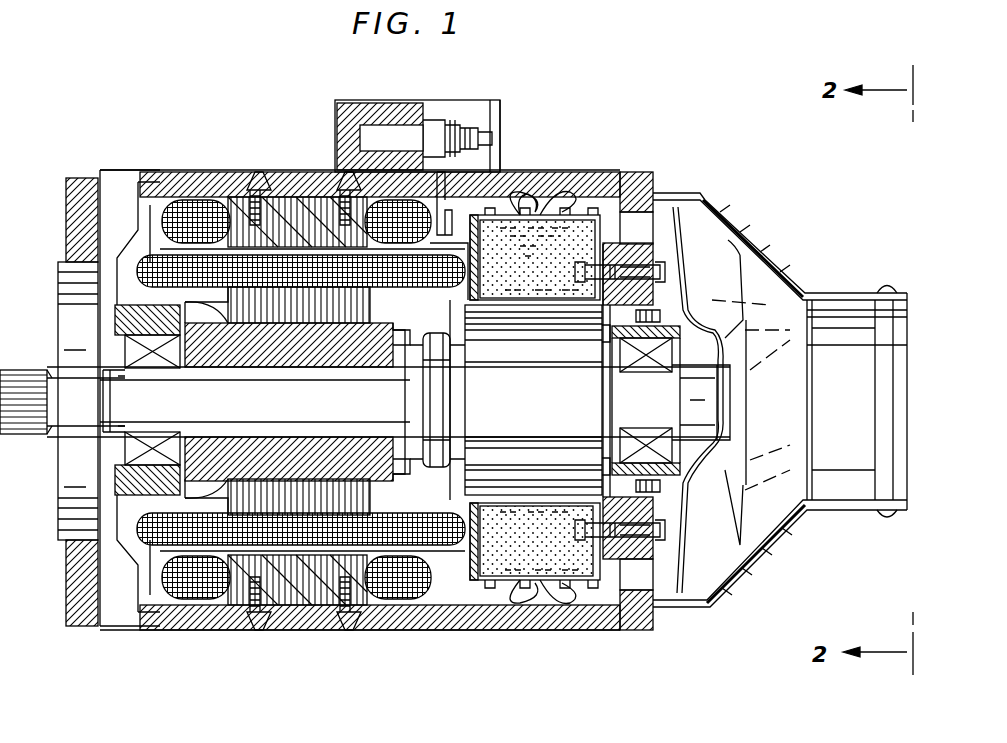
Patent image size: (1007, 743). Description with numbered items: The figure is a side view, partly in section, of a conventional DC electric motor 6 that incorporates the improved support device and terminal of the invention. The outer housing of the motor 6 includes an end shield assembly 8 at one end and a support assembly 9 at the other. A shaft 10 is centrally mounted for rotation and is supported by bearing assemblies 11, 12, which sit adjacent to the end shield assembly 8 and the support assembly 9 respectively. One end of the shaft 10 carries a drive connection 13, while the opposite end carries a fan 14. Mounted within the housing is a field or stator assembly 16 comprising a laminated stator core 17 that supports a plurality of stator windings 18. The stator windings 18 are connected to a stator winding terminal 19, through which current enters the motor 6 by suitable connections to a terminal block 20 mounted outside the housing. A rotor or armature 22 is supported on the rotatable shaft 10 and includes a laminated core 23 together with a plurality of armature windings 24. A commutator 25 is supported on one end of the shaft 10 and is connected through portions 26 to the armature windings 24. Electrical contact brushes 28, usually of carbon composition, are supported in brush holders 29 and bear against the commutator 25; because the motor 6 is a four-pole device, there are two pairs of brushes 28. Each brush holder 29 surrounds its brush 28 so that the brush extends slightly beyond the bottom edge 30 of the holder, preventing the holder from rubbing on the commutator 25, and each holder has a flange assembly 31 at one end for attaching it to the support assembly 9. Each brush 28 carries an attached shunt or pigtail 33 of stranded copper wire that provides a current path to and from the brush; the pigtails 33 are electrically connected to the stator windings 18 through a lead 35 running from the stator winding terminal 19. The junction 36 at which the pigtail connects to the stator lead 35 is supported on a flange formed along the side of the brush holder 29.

The DC electric motor 6 is at (732, 584).
The end shield assembly 8 is at (68, 218).
The support assembly 9 is at (637, 226).
The shaft 10 is at (388, 402).
The bearing assembly 11 is at (162, 440).
The bearing assembly 12 is at (650, 430).
The drive connection 13 is at (30, 432).
The fan 14 is at (722, 296).
The field or stator assembly 16 is at (254, 200).
The laminated stator core 17 is at (282, 186).
The stator windings 18 is at (238, 208).
The stator winding terminal 19 is at (450, 222).
The terminal block 20 is at (462, 110).
The rotor or armature 22 is at (250, 330).
The laminated core 23 is at (255, 490).
The armature windings 24 is at (393, 275).
The commutator 25 is at (478, 425).
The portions 26 is at (398, 345).
The electrical contact brushes 28 is at (655, 188).
The brush holders 29 is at (588, 312).
The bottom edge 30 is at (498, 312).
The flange assembly 31 is at (602, 262).
The shunt or pigtail 33 is at (555, 200).
The lead 35 is at (535, 398).
The junction 36 is at (590, 222).